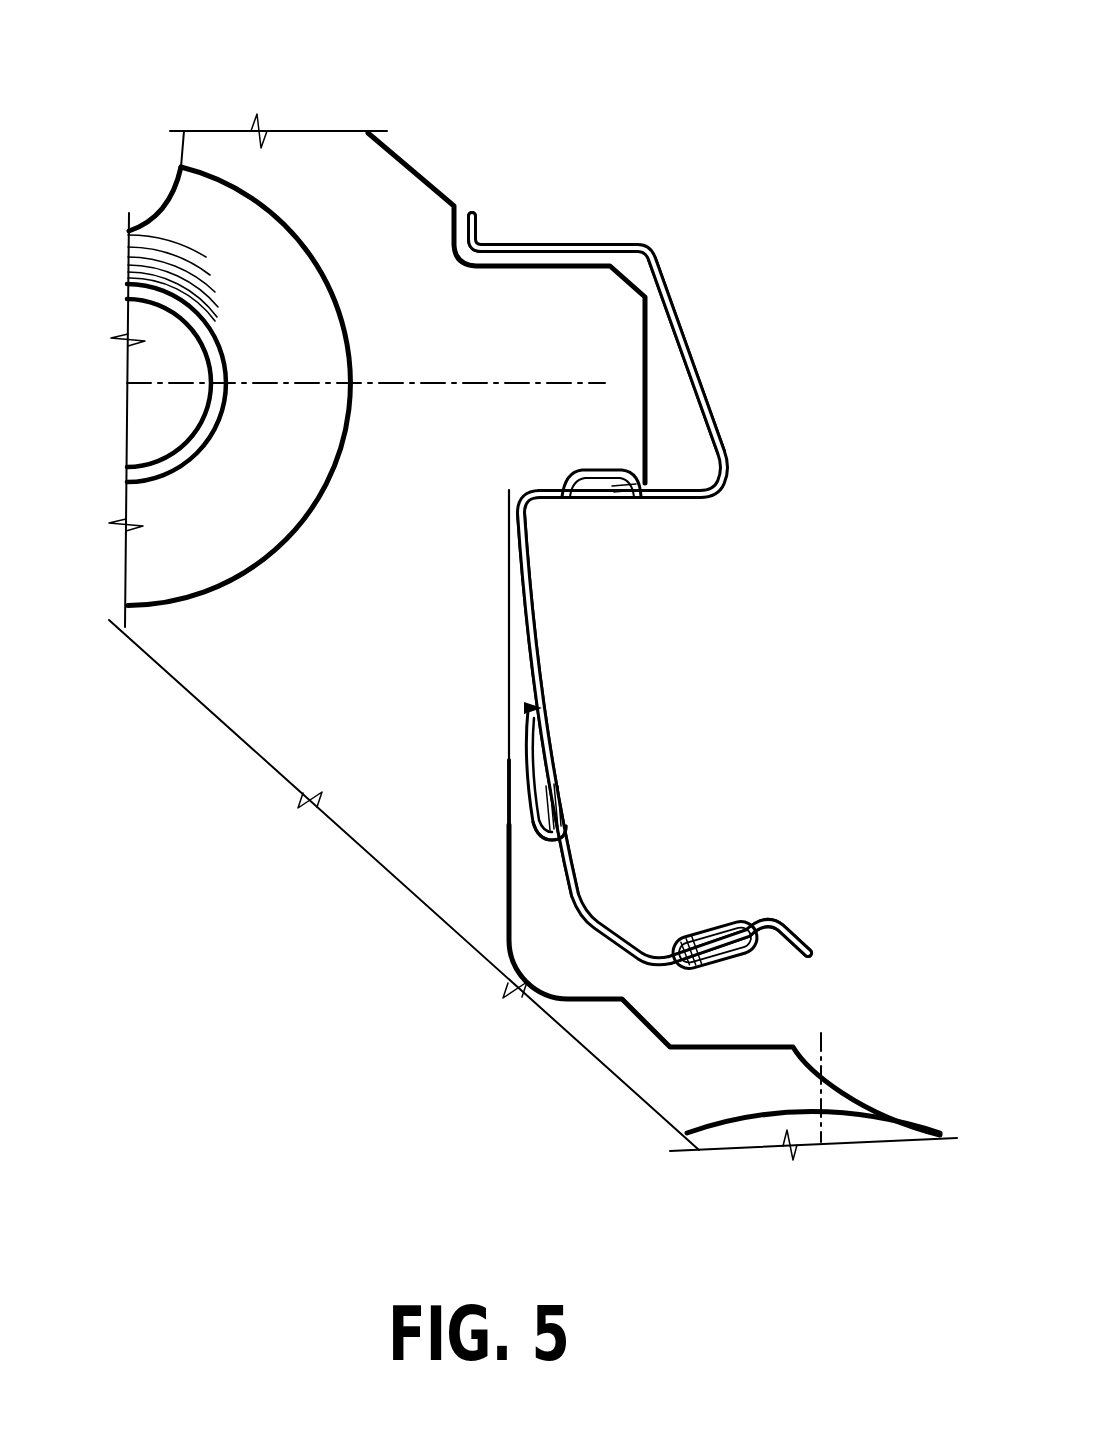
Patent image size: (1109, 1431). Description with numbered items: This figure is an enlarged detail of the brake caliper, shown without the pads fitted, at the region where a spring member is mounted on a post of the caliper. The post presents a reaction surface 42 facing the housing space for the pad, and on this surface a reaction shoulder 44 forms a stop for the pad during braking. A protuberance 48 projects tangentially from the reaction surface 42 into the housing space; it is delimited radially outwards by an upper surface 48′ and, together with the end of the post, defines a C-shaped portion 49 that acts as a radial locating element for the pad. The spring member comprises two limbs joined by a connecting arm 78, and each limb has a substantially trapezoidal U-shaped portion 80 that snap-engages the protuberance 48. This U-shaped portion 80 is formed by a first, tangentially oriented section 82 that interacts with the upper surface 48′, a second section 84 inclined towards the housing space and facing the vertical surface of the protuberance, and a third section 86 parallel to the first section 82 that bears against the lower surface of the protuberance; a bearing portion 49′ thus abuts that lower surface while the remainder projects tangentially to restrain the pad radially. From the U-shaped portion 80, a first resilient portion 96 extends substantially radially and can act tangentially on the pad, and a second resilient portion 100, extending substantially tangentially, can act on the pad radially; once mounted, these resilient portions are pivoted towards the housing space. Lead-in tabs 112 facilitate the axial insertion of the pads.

The reaction surface 42 is at (550, 708).
The reaction shoulder 44 is at (495, 688).
The protuberance 48 is at (535, 357).
The upper surface 48′ is at (519, 288).
The C-shaped portion 49 is at (494, 802).
The bearing portion 49′ is at (553, 487).
The connecting arm 78 is at (507, 226).
The U-shaped portion 80 is at (709, 256).
The first section 82 is at (525, 240).
The second section 84 is at (698, 366).
The third section 86 is at (671, 515).
The first resilient portion 96 is at (545, 707).
The second resilient portion 100 is at (665, 953).
The lead-in tab 112 is at (590, 500).